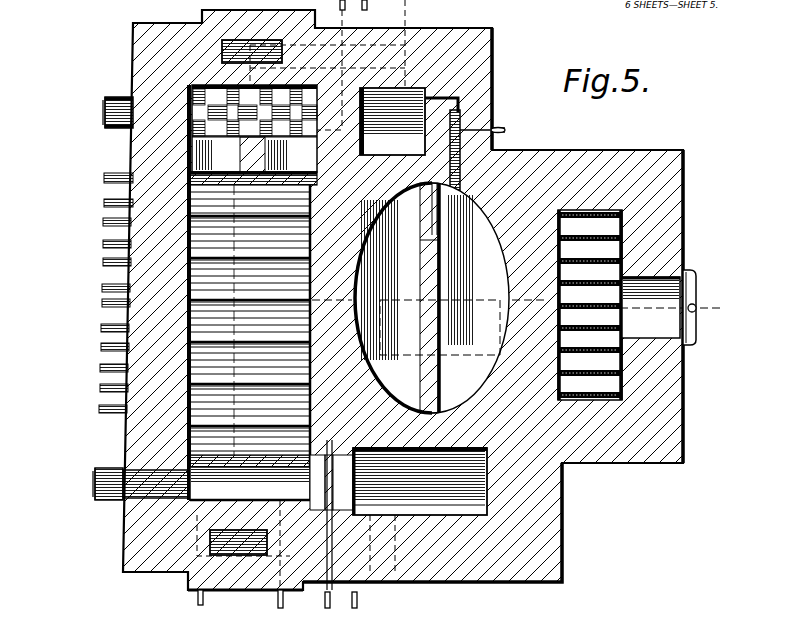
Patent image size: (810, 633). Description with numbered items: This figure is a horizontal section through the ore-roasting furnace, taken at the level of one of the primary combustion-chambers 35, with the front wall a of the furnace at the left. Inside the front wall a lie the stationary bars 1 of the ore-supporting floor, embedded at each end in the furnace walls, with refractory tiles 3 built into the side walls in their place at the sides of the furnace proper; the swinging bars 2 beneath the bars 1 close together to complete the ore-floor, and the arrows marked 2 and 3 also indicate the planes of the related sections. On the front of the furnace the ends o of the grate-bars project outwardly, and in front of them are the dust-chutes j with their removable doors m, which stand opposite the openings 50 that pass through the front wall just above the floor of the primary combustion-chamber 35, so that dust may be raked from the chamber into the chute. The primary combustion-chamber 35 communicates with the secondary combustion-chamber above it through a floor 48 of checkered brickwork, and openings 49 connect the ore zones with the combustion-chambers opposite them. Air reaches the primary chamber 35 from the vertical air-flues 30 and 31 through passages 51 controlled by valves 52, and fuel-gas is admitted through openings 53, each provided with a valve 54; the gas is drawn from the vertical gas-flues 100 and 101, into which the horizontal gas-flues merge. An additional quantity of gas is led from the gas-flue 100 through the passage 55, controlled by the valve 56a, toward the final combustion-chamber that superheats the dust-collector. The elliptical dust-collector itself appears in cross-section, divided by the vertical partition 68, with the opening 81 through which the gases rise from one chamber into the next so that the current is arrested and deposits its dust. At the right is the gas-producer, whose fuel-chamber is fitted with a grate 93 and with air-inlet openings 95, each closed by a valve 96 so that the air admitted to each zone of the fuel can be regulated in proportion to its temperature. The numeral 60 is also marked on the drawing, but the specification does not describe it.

The front wall a is at (132, 58).
The vertical air flue 30 is at (222, 40).
The checkered brickwork floor 48 is at (208, 107).
The openings 49 is at (220, 160).
The stationary bars 1 is at (183, 247).
The ends of the grate-bars o is at (105, 223).
The removable doors m is at (103, 115).
The dust-chutes j is at (112, 130).
The opening 50 is at (152, 483).
The refractory tiles 3 is at (132, 295).
The vertical gas-flue 101 is at (432, 139).
The vertical partition 68 is at (438, 307).
The opening 81 is at (442, 222).
The grate 93 is at (607, 250).
The air openings 95 is at (652, 317).
The valve 96 is at (698, 293).
The primary combustion-chamber 35 is at (250, 485).
The passages 51 is at (308, 578).
The openings 53 is at (420, 481).
The valve 54 is at (472, 542).
The vertical gas-flue 100 is at (472, 497).
The vertical air flue 31 is at (205, 555).
The valves 52 is at (263, 587).
The swinging bars 2 is at (178, 617).
The lower element 60 is at (154, 626).
The valve 56a is at (370, 580).
The passage 55 is at (407, 573).